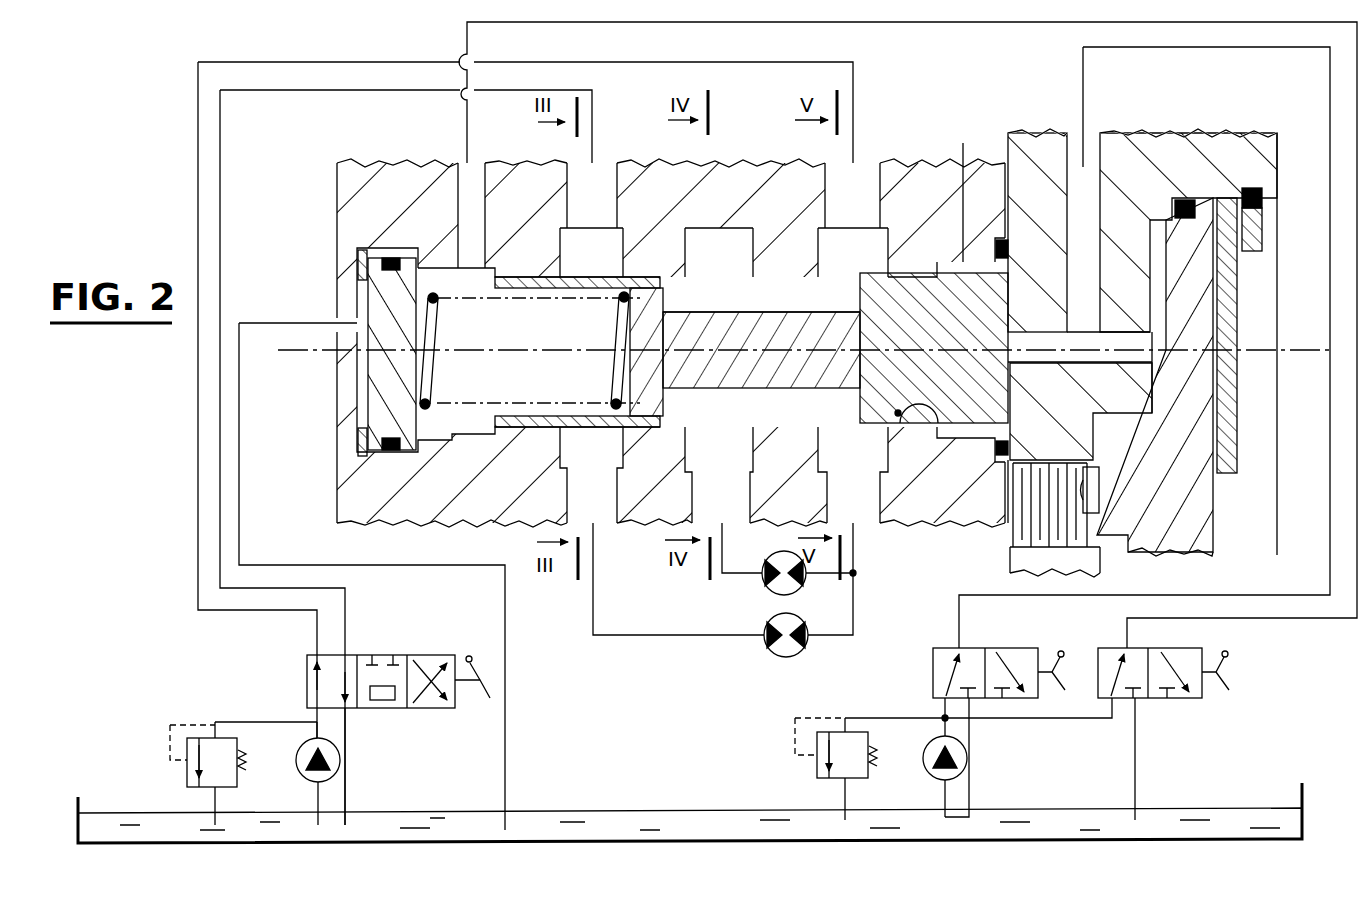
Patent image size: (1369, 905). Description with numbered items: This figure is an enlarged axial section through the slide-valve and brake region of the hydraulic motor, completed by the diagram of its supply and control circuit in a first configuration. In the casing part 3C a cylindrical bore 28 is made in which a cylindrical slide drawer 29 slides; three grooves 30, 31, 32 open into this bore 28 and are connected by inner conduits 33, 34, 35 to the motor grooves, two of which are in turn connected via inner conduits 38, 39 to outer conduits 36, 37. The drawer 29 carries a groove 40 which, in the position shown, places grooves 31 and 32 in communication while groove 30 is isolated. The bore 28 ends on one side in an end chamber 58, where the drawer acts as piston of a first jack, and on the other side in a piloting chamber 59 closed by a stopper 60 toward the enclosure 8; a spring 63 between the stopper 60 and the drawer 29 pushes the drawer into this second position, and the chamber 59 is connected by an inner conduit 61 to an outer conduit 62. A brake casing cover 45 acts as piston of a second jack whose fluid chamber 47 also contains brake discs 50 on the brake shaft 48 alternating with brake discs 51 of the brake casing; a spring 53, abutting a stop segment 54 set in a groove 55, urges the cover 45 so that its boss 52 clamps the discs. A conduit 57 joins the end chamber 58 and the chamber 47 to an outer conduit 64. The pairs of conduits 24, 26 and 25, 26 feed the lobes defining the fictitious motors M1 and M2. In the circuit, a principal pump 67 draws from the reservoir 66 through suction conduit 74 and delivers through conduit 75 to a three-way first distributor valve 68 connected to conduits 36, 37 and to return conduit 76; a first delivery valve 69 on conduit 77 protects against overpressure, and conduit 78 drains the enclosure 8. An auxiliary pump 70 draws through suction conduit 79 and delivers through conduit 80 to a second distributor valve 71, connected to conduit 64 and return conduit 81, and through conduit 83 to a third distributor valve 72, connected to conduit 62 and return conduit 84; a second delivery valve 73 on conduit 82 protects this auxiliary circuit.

The enclosure 8 is at (348, 403).
The conduit 24 is at (714, 638).
The conduit 25 is at (730, 572).
The conduit 26 is at (856, 594).
The cylindrical bore 28 is at (938, 423).
The cylindrical slide drawer 29 is at (912, 330).
The groove 30 is at (610, 245).
The groove 31 is at (694, 252).
The groove 32 is at (874, 252).
The inner conduit 33 is at (578, 484).
The inner conduit 34 is at (718, 492).
The inner conduit 35 is at (842, 487).
The outer conduit 36 is at (592, 102).
The outer conduit 37 is at (853, 88).
The inner conduit 38 is at (600, 180).
The inner conduit 39 is at (862, 172).
The groove 40 is at (708, 308).
The brake casing cover 45 is at (1190, 525).
The chamber 47 is at (1112, 415).
The brake shaft 48 is at (1010, 563).
The brake discs 50 is at (1035, 460).
The brake discs 51 is at (1062, 462).
The boss 52 is at (1095, 483).
The spring 53 is at (1227, 401).
The stop segment 54 is at (1262, 236).
The groove 55 is at (1258, 198).
The conduit 57 is at (1085, 263).
The end chamber 58 is at (967, 189).
The piloting chamber 59 is at (536, 338).
The stopper 60 is at (366, 265).
The inner conduit 61 is at (467, 210).
The outer conduit 62 is at (465, 103).
The spring 63 is at (432, 395).
The outer conduit 64 is at (1083, 97).
The fluid reservoir 66 is at (1302, 790).
The principal pump 67 is at (303, 770).
The first fluid distributor valve 68 is at (410, 710).
The first delivery valve 69 is at (185, 760).
The auxiliary pump 70 is at (930, 768).
The second fluid distributor valve 71 is at (930, 676).
The third fluid distributor valve 72 is at (1200, 648).
The second delivery valve 73 is at (814, 767).
The suction conduit 74 is at (320, 795).
The delivery conduit 75 is at (316, 722).
The conduit 76 is at (346, 748).
The conduit 77 is at (215, 730).
The conduit 78 is at (505, 752).
The suction conduit 79 is at (944, 795).
The delivery conduit 80 is at (943, 718).
The conduit 81 is at (970, 790).
The conduit 82 is at (846, 726).
The conduit 83 is at (1090, 718).
The conduit 84 is at (1136, 766).
The casing part 3C is at (1202, 168).
The fictitious motor M1 is at (766, 624).
The fictitious motor M2 is at (770, 584).